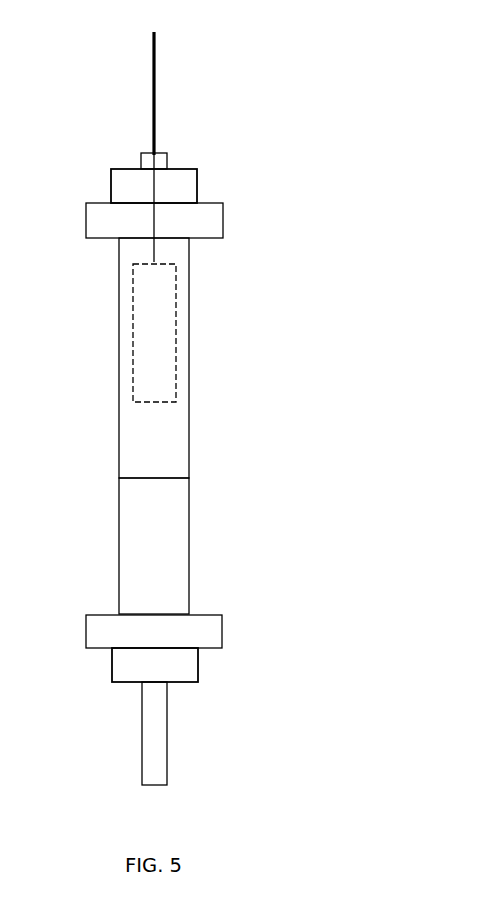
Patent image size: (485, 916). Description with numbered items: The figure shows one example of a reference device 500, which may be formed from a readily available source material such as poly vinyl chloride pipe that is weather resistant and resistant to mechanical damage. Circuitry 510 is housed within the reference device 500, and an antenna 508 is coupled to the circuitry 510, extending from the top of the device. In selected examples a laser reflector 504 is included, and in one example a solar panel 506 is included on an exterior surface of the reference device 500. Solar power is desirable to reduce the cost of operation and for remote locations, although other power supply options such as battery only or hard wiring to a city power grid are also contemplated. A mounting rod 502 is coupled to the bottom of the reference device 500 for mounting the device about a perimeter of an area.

The reference device 500 is at (212, 415).
The mounting rod 502 is at (157, 745).
The laser reflector 504 is at (143, 562).
The solar panel 506 is at (138, 428).
The antenna 508 is at (157, 91).
The circuitry 510 is at (165, 315).